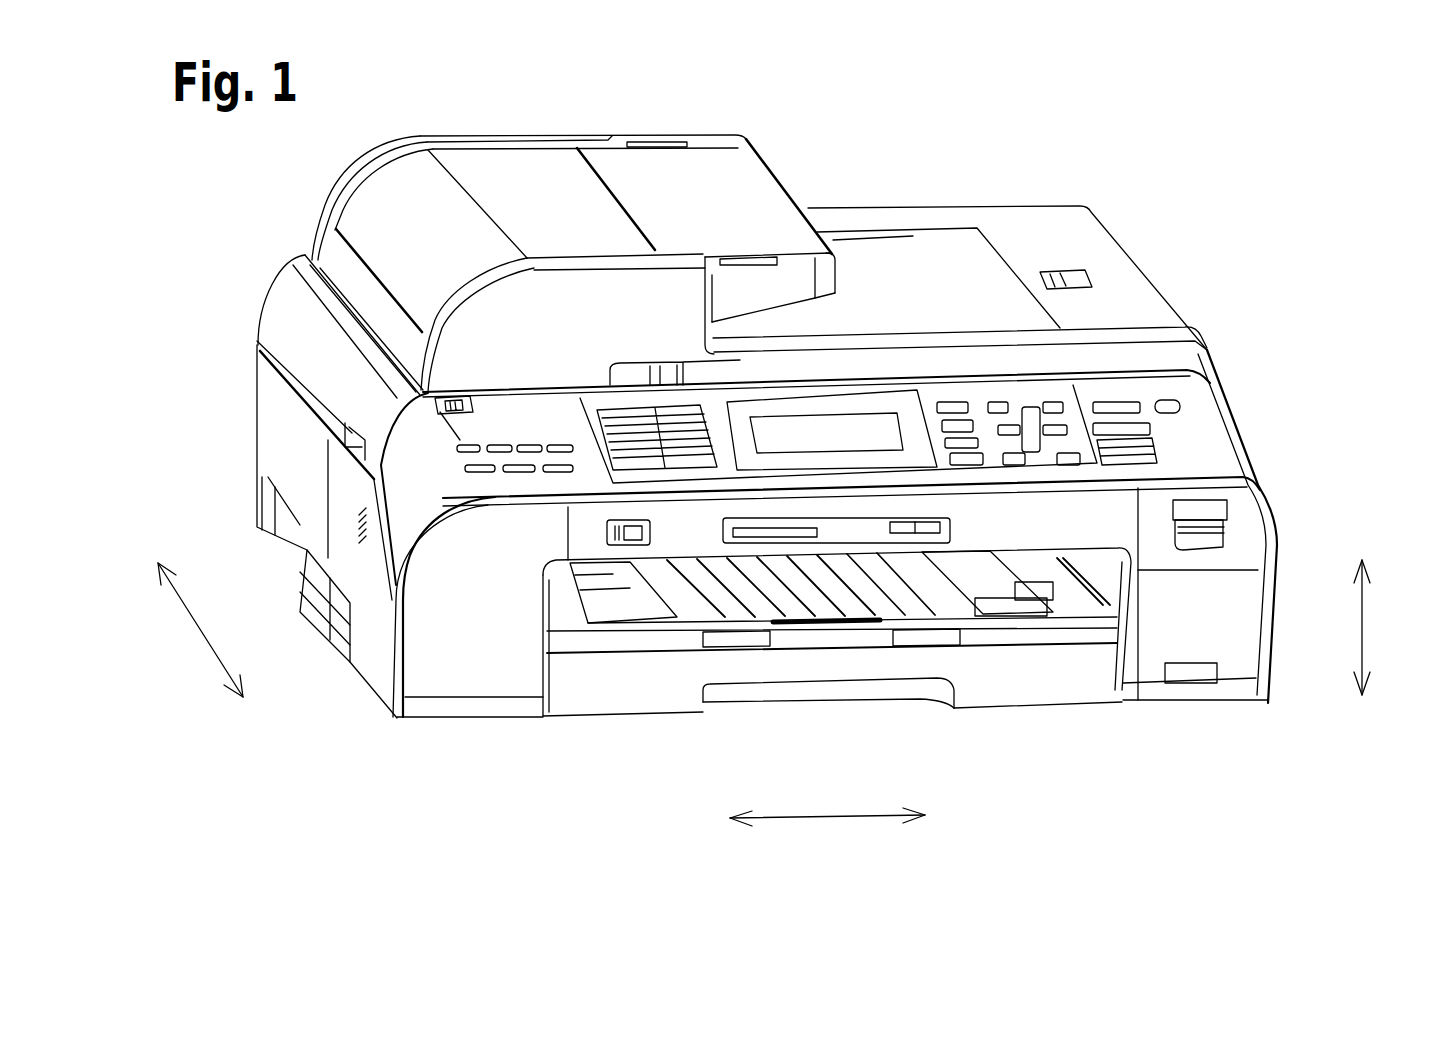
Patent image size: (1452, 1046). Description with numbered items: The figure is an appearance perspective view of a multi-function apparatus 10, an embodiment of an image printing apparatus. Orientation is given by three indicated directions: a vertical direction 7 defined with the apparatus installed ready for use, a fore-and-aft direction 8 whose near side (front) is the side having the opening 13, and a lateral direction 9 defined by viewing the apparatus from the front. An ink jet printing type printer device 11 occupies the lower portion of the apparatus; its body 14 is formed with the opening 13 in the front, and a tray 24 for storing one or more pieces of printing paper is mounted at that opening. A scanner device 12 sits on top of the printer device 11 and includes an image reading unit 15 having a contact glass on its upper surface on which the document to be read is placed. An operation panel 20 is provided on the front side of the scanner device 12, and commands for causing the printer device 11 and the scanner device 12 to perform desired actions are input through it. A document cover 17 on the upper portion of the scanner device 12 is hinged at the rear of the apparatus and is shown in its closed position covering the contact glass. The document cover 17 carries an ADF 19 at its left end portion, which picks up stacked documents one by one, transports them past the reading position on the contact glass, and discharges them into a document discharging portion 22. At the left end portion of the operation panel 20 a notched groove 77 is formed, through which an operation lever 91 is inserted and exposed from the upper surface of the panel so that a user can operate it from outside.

The vertical direction 7 is at (1365, 625).
The fore-and-aft direction 8 is at (195, 628).
The lateral direction 9 is at (822, 818).
The multi-function apparatus 10 is at (352, 753).
The printer device 11 is at (264, 450).
The scanner device 12 is at (266, 305).
The opening 13 is at (548, 612).
The body 14 is at (257, 400).
The image reading unit 15 is at (289, 272).
The document cover 17 is at (1053, 227).
The ADF (Auto Document Feeder) 19 is at (750, 127).
The operation panel 20 is at (1203, 440).
The document discharging portion 22 is at (897, 297).
The tray 24 is at (1007, 672).
The notched groove 77 is at (440, 412).
The operation lever 91 is at (452, 393).